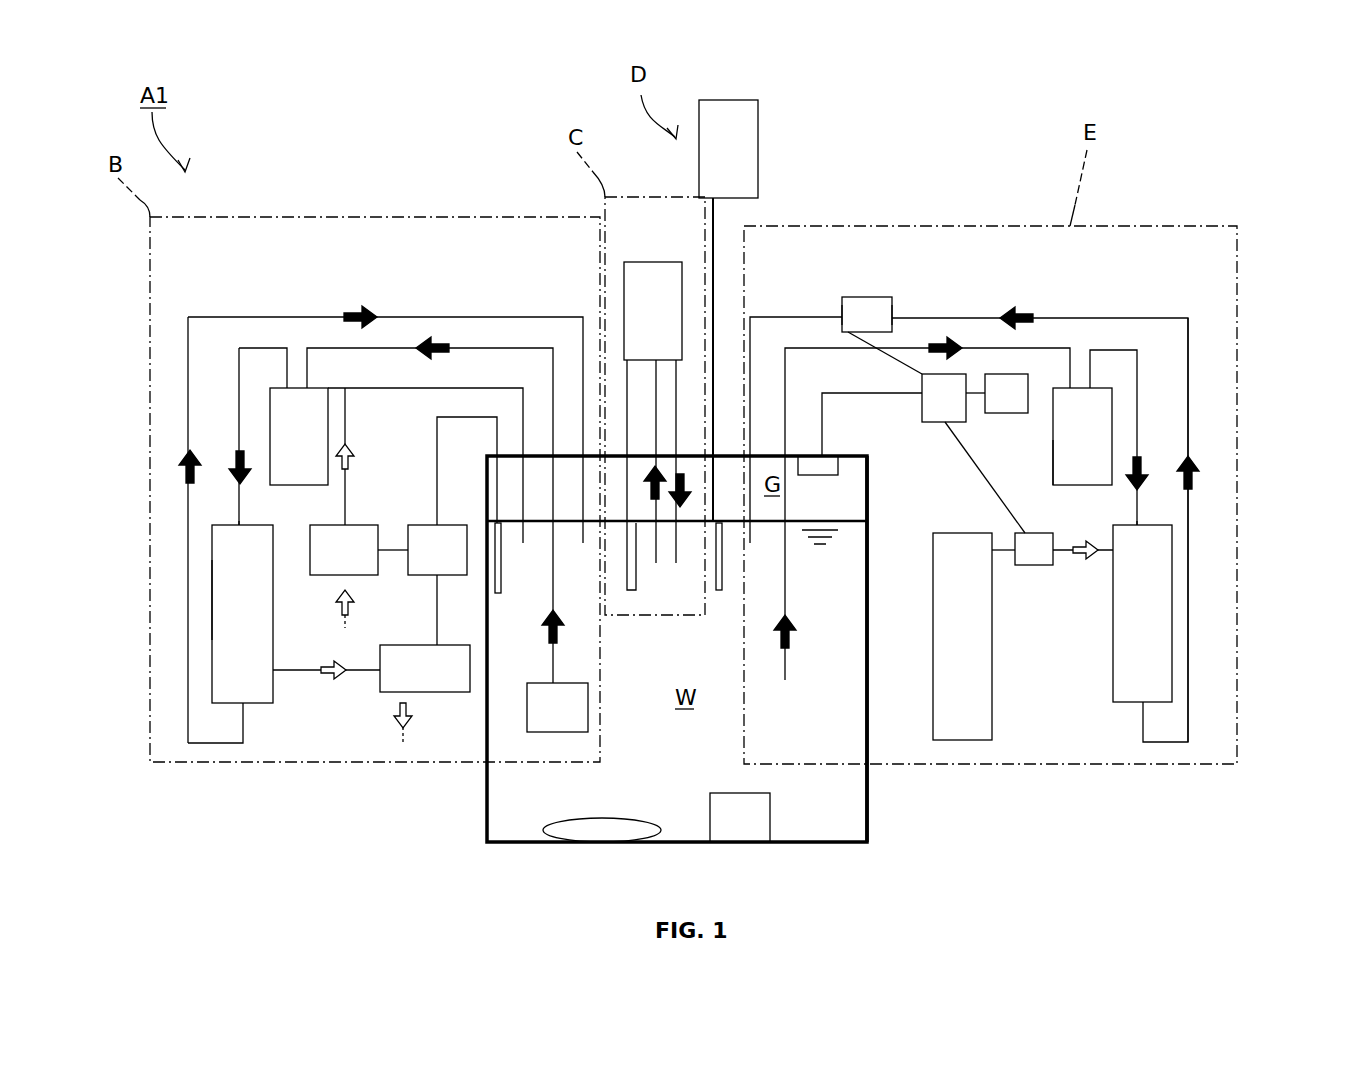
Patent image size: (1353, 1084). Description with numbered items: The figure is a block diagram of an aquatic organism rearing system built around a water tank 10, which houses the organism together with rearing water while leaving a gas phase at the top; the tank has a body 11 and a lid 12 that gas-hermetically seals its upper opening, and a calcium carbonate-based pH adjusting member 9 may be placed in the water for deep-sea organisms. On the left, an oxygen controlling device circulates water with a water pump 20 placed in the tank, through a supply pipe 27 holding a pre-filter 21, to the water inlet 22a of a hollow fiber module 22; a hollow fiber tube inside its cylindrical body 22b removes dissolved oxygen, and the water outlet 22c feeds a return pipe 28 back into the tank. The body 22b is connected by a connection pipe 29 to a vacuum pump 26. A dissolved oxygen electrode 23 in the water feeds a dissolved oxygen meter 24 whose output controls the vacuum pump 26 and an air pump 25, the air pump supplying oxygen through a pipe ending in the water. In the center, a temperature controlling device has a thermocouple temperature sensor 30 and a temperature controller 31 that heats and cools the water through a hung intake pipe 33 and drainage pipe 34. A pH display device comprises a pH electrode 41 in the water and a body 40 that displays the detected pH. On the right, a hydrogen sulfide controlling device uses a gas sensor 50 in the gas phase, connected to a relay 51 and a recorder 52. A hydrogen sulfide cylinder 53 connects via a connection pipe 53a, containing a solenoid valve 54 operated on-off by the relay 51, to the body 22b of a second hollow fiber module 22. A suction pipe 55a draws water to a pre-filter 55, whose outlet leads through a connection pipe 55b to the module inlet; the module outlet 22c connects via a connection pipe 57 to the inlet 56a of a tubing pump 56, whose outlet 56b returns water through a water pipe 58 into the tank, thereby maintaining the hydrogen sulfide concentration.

The pH adjusting member 9 is at (595, 835).
The water tank 10 is at (872, 840).
The body 11 is at (870, 795).
The lid 12 is at (828, 463).
The water pump 20 is at (527, 728).
The pre-filter 21 is at (270, 388).
The hollow fiber module 22 is at (212, 700).
The water inlet 22a is at (242, 523).
The body 22b is at (213, 588).
The water outlet 22c is at (242, 705).
The dissolved oxygen electrode 23 is at (502, 583).
The dissolved oxygen meter 24 is at (445, 523).
The air pump 25 is at (310, 556).
The vacuum pump 26 is at (383, 694).
The supply pipe 27 is at (239, 348).
The return pipe 28 is at (188, 317).
The connection pipe 29 is at (288, 672).
The temperature sensor 30 is at (637, 590).
The temperature controller 31 is at (653, 311).
The intake pipe 33 is at (654, 392).
The drainage pipe 34 is at (677, 380).
The body 40 is at (758, 101).
The pH electrode 41 is at (723, 565).
The gas sensor 50 is at (868, 490).
The relay 51 is at (967, 422).
The recorder 52 is at (1013, 374).
The hydrogen sulfide cylinder 53 is at (932, 700).
The connection pipe 53a is at (998, 555).
The solenoid valve 54 is at (1025, 567).
The pre-filter 55 is at (1053, 484).
The suction pipe 55a is at (815, 348).
The connection pipe 55b is at (1137, 367).
The tubing pump 56 is at (868, 296).
The inlet 56a is at (893, 318).
The outlet 56b is at (838, 317).
The connection pipe 57 is at (1188, 320).
The water pipe 58 is at (782, 317).